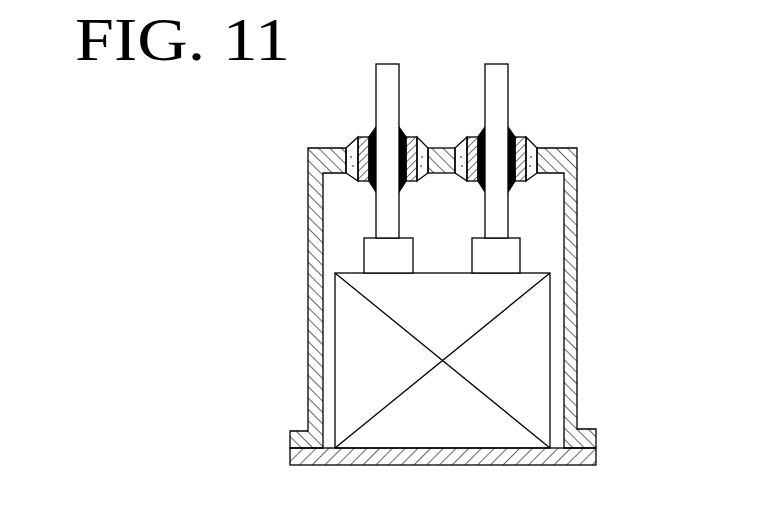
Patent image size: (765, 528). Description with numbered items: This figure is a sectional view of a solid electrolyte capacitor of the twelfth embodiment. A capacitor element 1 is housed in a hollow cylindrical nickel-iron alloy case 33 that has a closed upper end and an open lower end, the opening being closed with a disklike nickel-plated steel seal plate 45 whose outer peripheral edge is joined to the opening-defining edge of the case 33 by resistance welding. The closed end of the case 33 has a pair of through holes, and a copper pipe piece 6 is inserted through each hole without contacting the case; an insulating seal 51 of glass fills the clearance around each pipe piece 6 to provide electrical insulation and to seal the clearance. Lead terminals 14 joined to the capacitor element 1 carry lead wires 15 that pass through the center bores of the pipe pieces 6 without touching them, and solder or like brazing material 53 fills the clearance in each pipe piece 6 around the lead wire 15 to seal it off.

The capacitor element 1 is at (545, 365).
The copper pipe piece 6 is at (358, 138).
The lead terminal 14 is at (370, 261).
The lead wire 15 is at (376, 119).
The case 33 is at (577, 222).
The seal plate 45 is at (568, 465).
The insulating seal 51 is at (346, 150).
The brazing material 53 is at (401, 126).